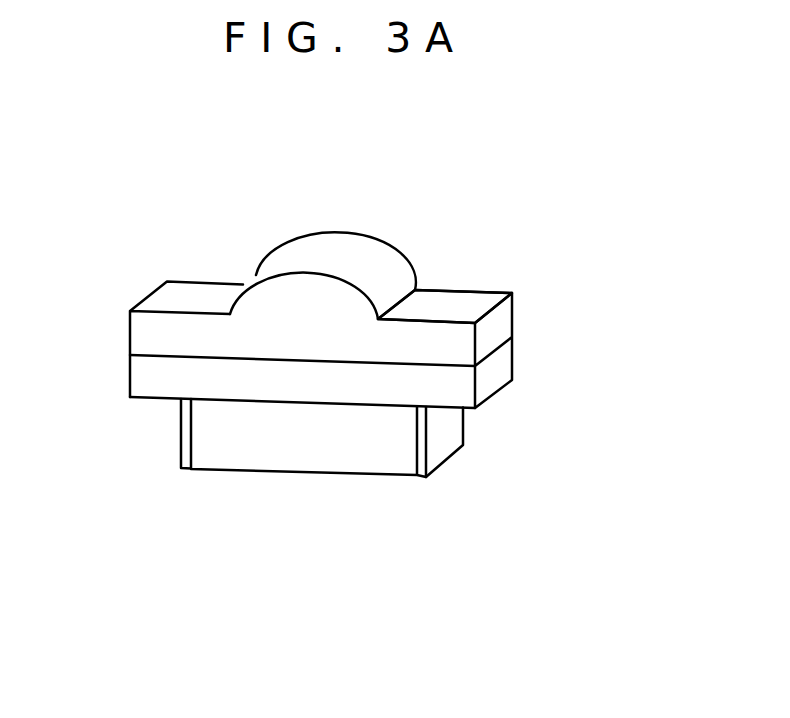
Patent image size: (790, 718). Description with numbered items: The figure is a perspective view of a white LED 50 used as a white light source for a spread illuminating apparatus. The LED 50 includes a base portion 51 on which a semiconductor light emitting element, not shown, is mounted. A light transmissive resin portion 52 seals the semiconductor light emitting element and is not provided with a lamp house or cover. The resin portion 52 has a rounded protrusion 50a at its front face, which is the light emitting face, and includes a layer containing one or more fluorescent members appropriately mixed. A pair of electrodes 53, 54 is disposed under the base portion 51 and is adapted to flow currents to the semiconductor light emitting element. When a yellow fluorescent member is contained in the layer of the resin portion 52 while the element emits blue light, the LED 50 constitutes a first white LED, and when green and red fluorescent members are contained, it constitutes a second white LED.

The LED 50 is at (252, 538).
The rounded protrusion 50a is at (340, 252).
The base portion 51 is at (493, 369).
The resin portion 52 is at (457, 302).
The electrode 53 is at (187, 435).
The electrode 54 is at (440, 438).